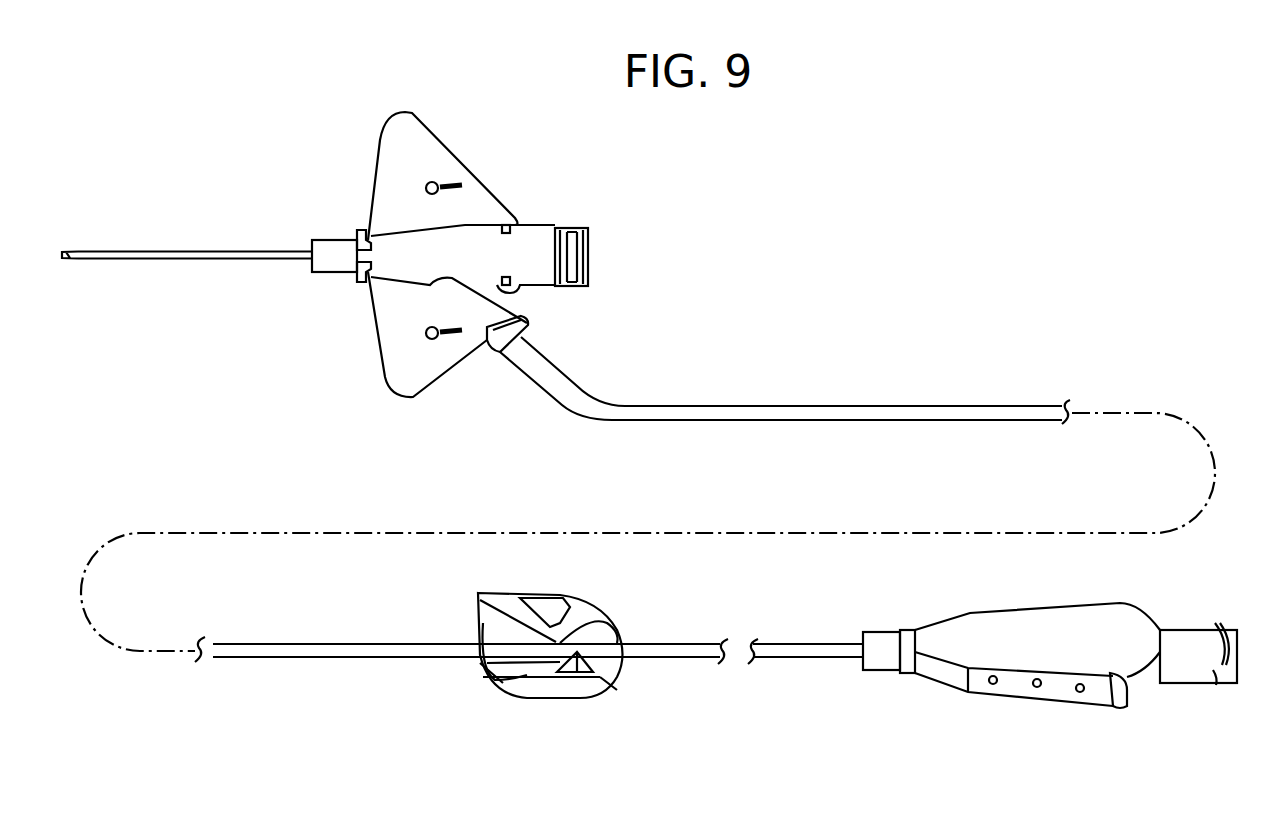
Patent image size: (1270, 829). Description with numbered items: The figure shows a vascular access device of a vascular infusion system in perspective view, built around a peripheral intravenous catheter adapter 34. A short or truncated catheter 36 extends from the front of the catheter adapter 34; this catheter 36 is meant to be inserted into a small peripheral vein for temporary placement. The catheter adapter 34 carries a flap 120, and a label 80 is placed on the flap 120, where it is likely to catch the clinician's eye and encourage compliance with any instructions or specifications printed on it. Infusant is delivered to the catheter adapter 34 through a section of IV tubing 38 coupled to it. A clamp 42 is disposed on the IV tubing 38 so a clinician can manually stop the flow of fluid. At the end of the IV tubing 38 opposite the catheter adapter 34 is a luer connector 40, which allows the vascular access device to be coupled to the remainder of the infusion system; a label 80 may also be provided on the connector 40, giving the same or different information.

The peripheral intravenous catheter adapter 34 is at (443, 377).
The catheter 36 is at (158, 260).
The IV tubing 38 is at (827, 409).
The connector 40 is at (1027, 707).
The clamp 42 is at (557, 688).
The label 80 is at (367, 188).
The flap 120 is at (410, 123).